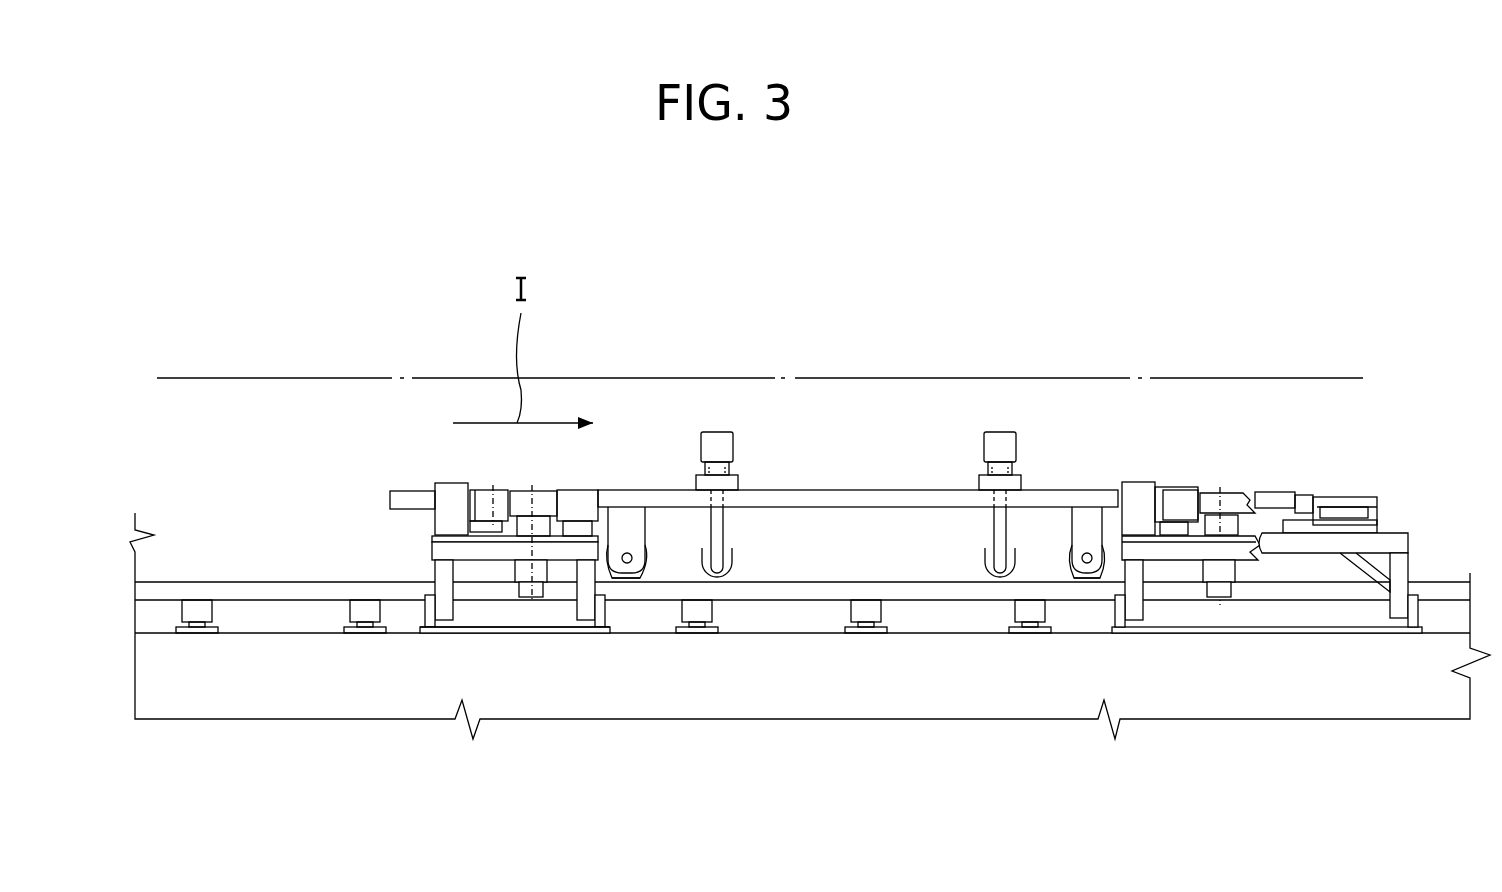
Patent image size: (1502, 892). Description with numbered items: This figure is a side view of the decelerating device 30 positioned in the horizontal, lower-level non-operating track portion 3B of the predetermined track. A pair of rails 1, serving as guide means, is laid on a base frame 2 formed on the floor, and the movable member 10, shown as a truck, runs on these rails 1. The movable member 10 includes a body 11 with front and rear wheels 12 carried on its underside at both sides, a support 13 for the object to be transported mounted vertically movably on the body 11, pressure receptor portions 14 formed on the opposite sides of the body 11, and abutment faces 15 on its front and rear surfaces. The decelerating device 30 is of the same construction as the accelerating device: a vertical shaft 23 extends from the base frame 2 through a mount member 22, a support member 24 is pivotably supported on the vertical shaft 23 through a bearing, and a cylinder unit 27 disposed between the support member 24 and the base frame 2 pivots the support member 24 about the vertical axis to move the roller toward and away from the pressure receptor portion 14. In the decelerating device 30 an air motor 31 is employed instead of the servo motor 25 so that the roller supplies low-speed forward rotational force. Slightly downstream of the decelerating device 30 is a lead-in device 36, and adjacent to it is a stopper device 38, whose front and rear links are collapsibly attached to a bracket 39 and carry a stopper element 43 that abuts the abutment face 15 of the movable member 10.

The rails 1 is at (831, 600).
The base frame 2 is at (793, 685).
The non-operating track portion 3B is at (753, 378).
The movable member 10 is at (910, 515).
The body 11 is at (825, 488).
The wheels 12 is at (1065, 580).
The support 13 is at (1003, 433).
The pressure receptor portion 14 is at (762, 497).
The abutment face 15 is at (388, 498).
The mount member 22 is at (432, 635).
The vertical shaft 23 is at (572, 520).
The support member 24 is at (543, 500).
The servo motor 25 is at (1242, 572).
The cylinder unit 27 is at (477, 505).
The decelerating device 30 is at (562, 648).
The air motor 31 is at (532, 597).
The lead-in device 36 is at (1205, 608).
The stopper device 38 is at (1352, 488).
The bracket 39 is at (1377, 545).
The stopper element 43 is at (1302, 502).